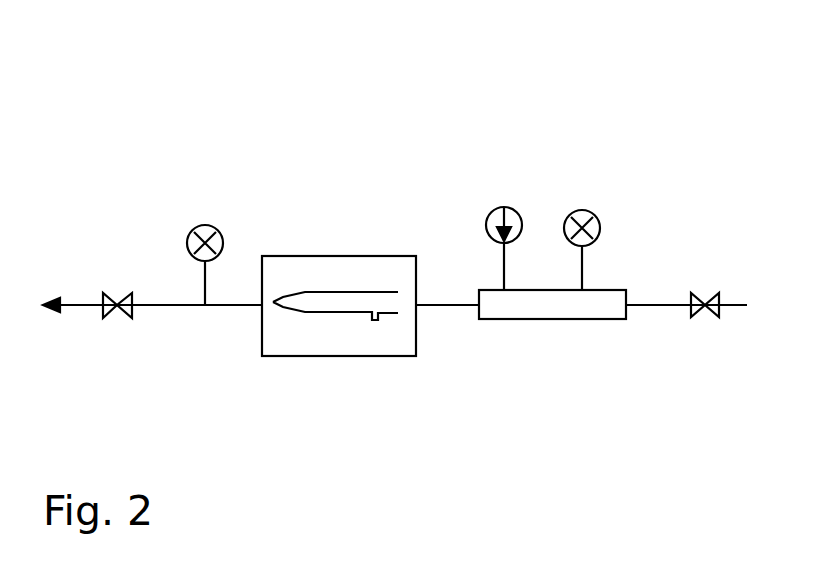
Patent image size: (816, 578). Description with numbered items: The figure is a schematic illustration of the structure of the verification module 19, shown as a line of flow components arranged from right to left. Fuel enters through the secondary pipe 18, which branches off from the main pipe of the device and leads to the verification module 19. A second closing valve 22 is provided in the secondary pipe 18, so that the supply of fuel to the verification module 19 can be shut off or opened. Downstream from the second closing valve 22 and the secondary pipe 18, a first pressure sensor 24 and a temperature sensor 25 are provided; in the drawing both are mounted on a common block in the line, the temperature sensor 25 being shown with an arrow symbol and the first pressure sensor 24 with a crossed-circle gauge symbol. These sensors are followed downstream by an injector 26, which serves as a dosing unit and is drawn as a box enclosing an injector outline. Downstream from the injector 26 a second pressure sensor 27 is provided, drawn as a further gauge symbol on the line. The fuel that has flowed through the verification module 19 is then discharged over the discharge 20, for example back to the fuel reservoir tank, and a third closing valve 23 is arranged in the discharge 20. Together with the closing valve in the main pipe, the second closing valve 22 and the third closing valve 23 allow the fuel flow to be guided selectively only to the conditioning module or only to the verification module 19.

The verification module 19 is at (305, 100).
The discharge 20 is at (83, 305).
The third closing valve 23 is at (110, 312).
The second pressure sensor 27 is at (202, 225).
The injector 26 is at (323, 256).
The temperature sensor 25 is at (502, 207).
The first pressure sensor 24 is at (583, 210).
The secondary pipe 18 is at (659, 305).
The second closing valve 22 is at (710, 310).